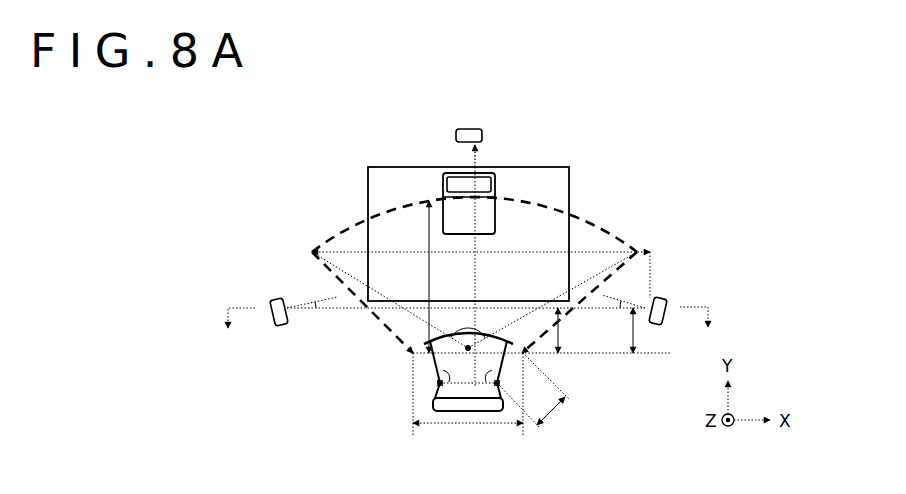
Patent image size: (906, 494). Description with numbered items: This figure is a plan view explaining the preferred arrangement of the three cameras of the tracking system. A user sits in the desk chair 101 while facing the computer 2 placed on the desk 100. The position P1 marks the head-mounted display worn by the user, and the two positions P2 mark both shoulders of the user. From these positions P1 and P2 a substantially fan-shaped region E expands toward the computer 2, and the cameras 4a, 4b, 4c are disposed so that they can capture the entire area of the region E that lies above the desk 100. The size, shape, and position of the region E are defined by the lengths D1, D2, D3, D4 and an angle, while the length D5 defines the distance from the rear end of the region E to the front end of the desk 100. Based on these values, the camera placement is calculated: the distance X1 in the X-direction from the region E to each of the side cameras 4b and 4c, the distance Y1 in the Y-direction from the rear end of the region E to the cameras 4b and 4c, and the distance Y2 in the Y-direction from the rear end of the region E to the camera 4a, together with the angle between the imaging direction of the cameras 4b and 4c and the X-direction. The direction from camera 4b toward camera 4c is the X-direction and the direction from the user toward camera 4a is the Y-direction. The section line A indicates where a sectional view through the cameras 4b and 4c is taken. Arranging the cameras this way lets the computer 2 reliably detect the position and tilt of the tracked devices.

The desk 100 is at (540, 178).
The computer 2 is at (487, 218).
The camera 4a is at (471, 136).
The camera 4b is at (276, 299).
The camera 4c is at (662, 298).
The desk chair 101 is at (494, 403).
The region E is at (345, 231).
The position P1 is at (466, 350).
The positions P2 is at (496, 384).
The distance X1 is at (638, 249).
The distance Y1 is at (648, 330).
The distance Y2 is at (466, 277).
The length D1 is at (435, 277).
The length D2 is at (522, 239).
The length D3 is at (468, 400).
The length D4 is at (538, 393).
The length D5 is at (576, 330).
The line A- A is at (465, 315).